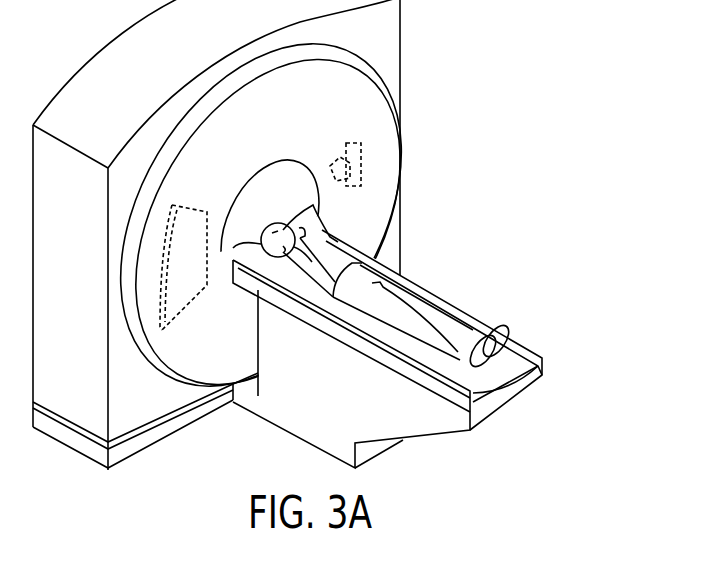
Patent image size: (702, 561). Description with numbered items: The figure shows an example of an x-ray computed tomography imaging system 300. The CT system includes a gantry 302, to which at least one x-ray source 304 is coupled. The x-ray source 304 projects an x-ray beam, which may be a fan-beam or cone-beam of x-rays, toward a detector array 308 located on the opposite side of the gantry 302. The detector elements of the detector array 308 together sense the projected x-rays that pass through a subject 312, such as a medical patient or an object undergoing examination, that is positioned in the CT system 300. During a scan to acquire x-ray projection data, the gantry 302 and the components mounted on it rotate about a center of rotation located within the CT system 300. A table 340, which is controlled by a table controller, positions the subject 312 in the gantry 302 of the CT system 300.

The x-ray computed tomography imaging system 300 is at (486, 48).
The gantry 302 is at (398, 125).
The x-ray source 304 is at (348, 140).
The detector array 308 is at (200, 205).
The subject 312 is at (336, 238).
The table 340 is at (527, 347).